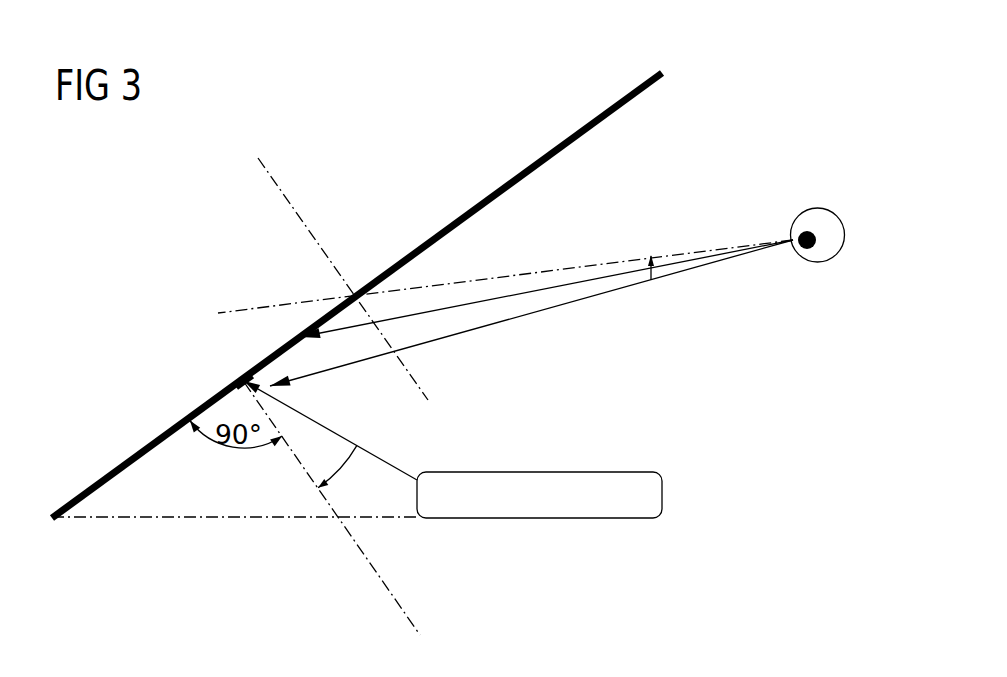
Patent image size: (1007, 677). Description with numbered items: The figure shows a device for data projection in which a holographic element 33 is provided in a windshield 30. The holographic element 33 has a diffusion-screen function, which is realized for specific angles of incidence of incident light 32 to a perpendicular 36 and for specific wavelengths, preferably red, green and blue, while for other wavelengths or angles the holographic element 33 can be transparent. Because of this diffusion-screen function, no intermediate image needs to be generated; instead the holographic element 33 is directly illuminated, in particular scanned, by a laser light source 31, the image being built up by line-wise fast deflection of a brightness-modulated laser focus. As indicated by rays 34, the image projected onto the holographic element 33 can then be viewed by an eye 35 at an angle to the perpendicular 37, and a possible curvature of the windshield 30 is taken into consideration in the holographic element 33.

The windshield 30 is at (119, 460).
The laser light source 31 is at (538, 472).
The incident light 32 is at (386, 462).
The holographic element 33 is at (235, 381).
The rays 34 is at (633, 270).
The eye 35 is at (818, 208).
The perpendicular 36 is at (307, 474).
The perpendicular 37 is at (266, 170).